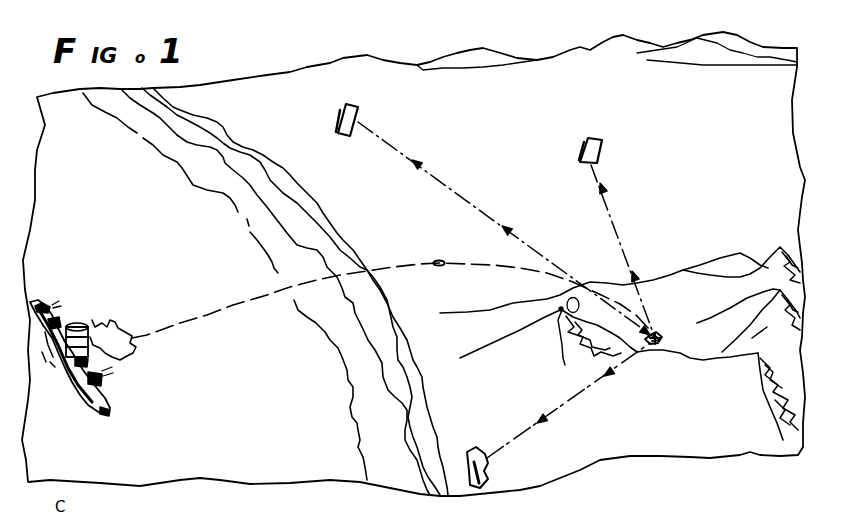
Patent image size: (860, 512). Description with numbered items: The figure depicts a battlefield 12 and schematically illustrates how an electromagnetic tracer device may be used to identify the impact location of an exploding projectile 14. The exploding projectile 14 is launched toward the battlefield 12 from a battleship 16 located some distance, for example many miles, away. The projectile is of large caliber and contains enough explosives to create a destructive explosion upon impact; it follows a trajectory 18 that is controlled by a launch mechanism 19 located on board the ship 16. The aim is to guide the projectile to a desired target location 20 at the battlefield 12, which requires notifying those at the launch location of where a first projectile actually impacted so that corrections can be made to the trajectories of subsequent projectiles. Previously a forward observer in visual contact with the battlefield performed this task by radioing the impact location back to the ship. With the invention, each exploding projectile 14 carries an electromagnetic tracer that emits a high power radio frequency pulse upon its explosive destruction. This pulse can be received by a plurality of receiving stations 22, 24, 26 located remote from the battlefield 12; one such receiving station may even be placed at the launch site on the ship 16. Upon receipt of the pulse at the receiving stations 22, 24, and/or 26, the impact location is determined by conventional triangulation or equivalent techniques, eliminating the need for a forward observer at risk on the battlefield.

The battlefield 12 is at (675, 237).
The exploding projectile 14 is at (443, 250).
The battleship 16 is at (80, 318).
The trajectory 18 is at (230, 298).
The launch mechanism 19 is at (56, 391).
The target location 20 is at (661, 336).
The receiving station 22 is at (466, 452).
The receiving station 24 is at (360, 111).
The receiving station 26 is at (603, 152).